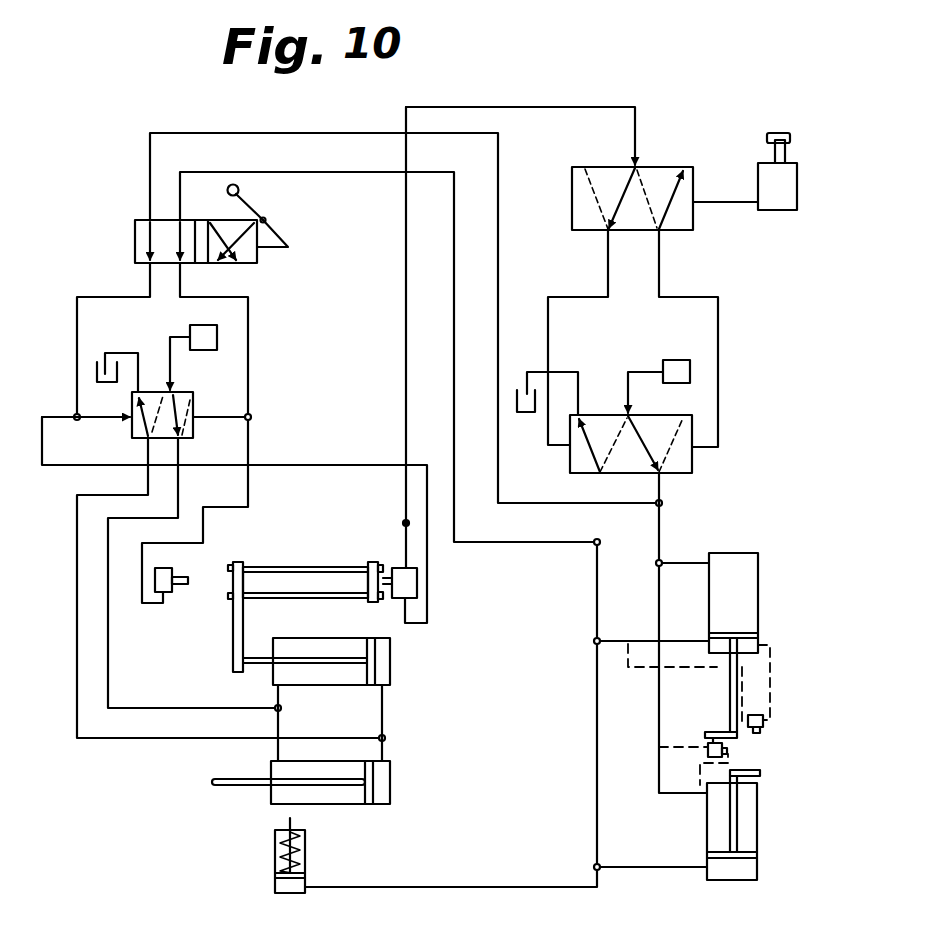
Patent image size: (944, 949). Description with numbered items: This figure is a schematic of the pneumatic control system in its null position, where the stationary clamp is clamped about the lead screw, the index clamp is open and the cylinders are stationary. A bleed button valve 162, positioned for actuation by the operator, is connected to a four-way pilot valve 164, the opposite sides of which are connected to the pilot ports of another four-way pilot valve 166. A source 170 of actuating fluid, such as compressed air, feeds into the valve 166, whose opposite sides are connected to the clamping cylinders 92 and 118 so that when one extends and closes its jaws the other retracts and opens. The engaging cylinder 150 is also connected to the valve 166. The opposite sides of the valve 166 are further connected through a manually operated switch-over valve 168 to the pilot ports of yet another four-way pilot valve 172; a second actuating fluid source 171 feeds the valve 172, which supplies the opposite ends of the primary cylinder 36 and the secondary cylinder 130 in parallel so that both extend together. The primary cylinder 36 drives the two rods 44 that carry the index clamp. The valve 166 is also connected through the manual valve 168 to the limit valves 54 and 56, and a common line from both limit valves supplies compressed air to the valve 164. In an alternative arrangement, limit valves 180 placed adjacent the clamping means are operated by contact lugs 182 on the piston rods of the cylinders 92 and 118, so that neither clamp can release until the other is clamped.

The manually operated switch-over valve 168 is at (135, 238).
The actuating fluid source 171 is at (217, 340).
The 4-way pilot valve 172 is at (193, 405).
The limit valve 54 is at (173, 592).
The rods 44 is at (305, 590).
The limit valve 56 is at (417, 583).
The primary cylinder 36 is at (390, 668).
The secondary cylinder 130 is at (390, 782).
The engaging cylinder 150 is at (305, 862).
The 4-way pilot valve 164 is at (668, 167).
The bleed button valve 162 is at (797, 183).
The actuating fluid source 170 is at (690, 370).
The 4-way pilot valve 166 is at (692, 462).
The pneumatic cylinder 118 is at (738, 595).
The contact lug 182 is at (717, 732).
The limit valve 180 is at (708, 750).
The pneumatic cylinder 92 is at (757, 832).